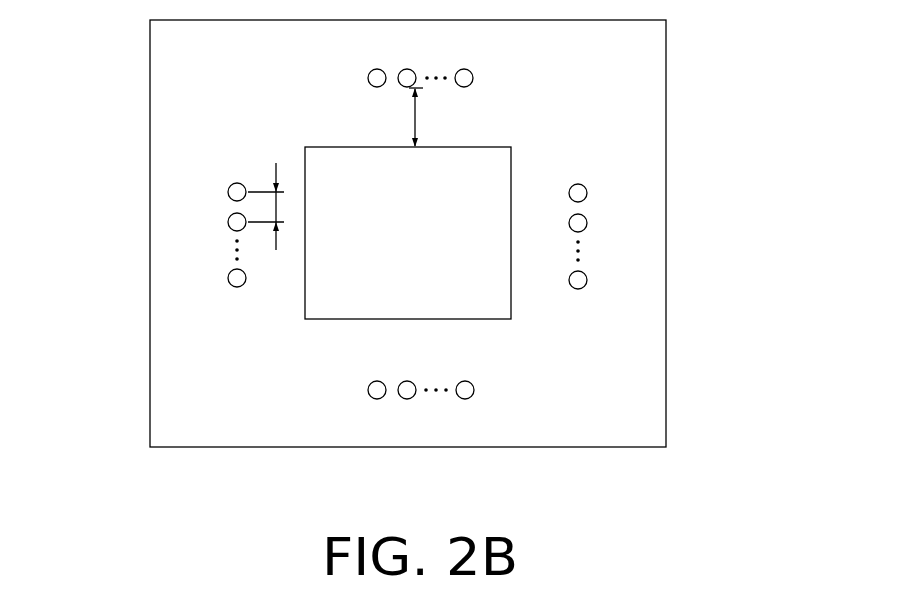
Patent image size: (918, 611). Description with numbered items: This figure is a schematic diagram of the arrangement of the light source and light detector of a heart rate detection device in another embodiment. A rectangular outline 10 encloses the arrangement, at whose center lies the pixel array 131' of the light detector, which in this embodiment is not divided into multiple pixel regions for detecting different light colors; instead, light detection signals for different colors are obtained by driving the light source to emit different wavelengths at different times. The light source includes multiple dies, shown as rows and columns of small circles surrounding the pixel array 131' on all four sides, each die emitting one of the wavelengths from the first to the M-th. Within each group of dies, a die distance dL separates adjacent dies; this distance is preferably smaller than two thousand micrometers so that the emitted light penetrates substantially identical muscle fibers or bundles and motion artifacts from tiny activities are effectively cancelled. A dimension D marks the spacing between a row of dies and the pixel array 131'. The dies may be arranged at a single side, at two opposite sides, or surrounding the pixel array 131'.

The substrate 10 is at (666, 106).
The pixel array 131' is at (274, 262).
The distance between light source and sensing region D is at (406, 117).
The die distance dL is at (266, 206).